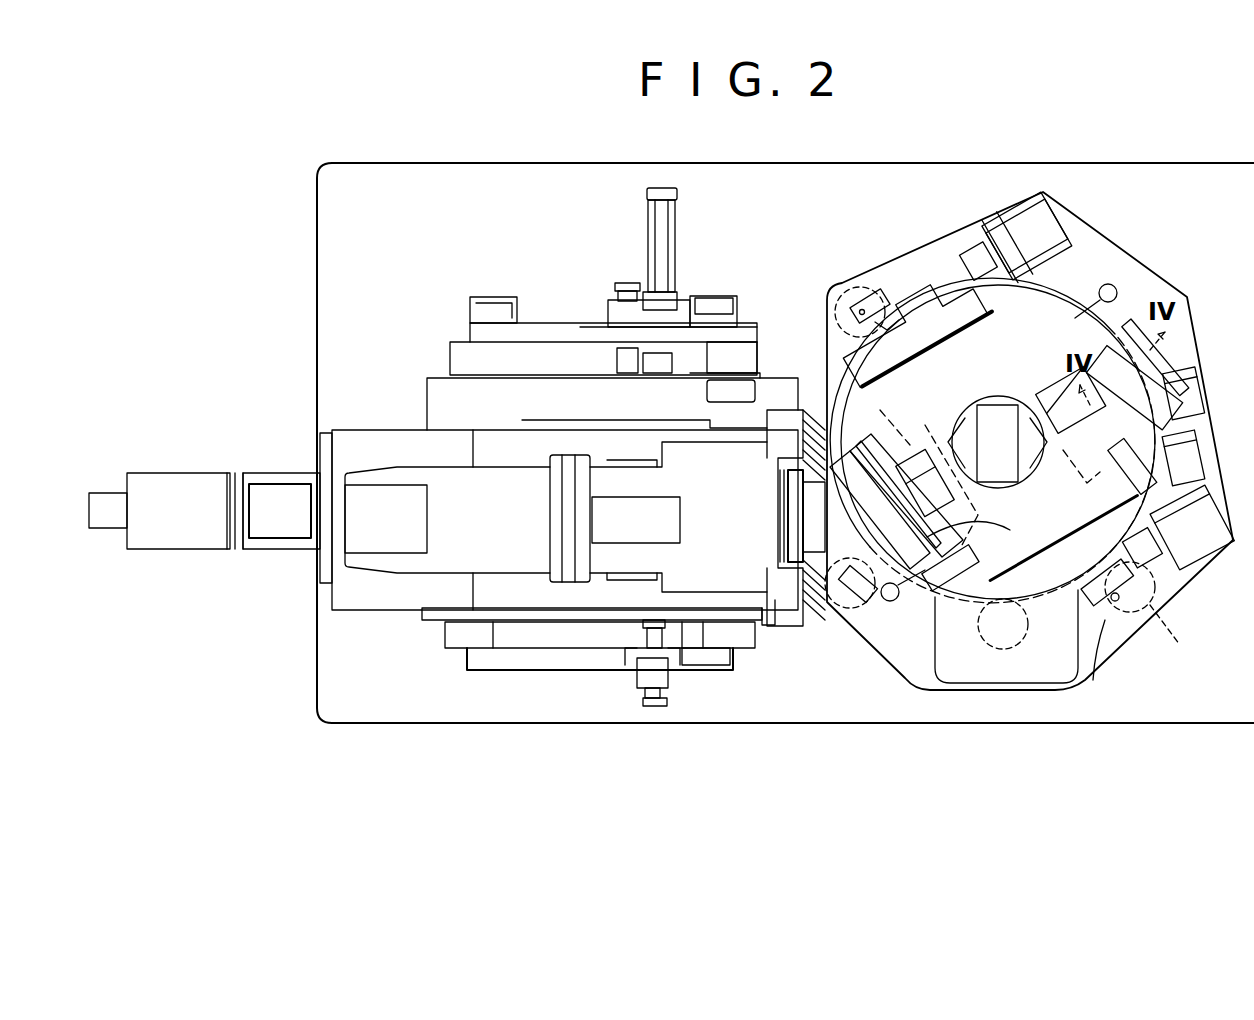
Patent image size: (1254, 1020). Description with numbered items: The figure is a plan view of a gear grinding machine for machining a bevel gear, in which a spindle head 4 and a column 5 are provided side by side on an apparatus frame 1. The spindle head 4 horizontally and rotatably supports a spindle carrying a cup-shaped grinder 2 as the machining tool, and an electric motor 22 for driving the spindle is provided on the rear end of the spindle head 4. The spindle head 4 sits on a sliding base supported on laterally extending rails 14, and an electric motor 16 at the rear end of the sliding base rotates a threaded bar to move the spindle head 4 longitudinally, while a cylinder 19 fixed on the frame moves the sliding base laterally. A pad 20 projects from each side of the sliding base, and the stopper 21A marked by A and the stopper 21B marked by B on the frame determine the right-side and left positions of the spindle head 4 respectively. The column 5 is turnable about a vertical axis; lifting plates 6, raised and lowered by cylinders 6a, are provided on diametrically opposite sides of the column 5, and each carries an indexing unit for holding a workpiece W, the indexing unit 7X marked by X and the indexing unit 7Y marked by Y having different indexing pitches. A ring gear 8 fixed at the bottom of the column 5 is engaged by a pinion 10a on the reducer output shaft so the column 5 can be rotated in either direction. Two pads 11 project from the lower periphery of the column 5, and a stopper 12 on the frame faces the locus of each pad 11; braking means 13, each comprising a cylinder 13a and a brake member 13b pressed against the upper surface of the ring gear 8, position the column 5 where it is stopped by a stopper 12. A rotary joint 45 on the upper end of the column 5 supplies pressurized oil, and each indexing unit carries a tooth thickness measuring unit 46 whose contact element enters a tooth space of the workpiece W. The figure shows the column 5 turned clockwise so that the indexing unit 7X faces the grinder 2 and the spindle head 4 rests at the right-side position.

The apparatus frame 1 is at (332, 296).
The cup-shaped grinder 2 is at (805, 598).
The spindle head 4 is at (720, 637).
The column 5 is at (1063, 307).
The lifting plate 6 is at (990, 524).
The cylinder 6a is at (930, 480).
The indexing unit marked by X 7X is at (935, 387).
The indexing unit marked by Y 7Y is at (1128, 305).
The ring gear 8 is at (1060, 580).
The pinion 10a is at (1006, 645).
The pad 11 is at (940, 290).
The stopper 12 is at (960, 265).
The braking means 13 is at (870, 290).
The cylinder 13a is at (1191, 638).
The brake member 13b is at (1093, 680).
The rails 14 is at (460, 638).
The electric motor 16 is at (192, 482).
The cylinder 19 is at (668, 240).
The pad 20 is at (623, 360).
The stopper marked by A 21A is at (652, 670).
The stopper marked by B 21B is at (624, 330).
The electric motor 22 is at (435, 470).
The rotary joint 45 is at (998, 405).
The tooth thickness measuring unit 46 is at (1101, 287).
The workpiece W is at (825, 600).